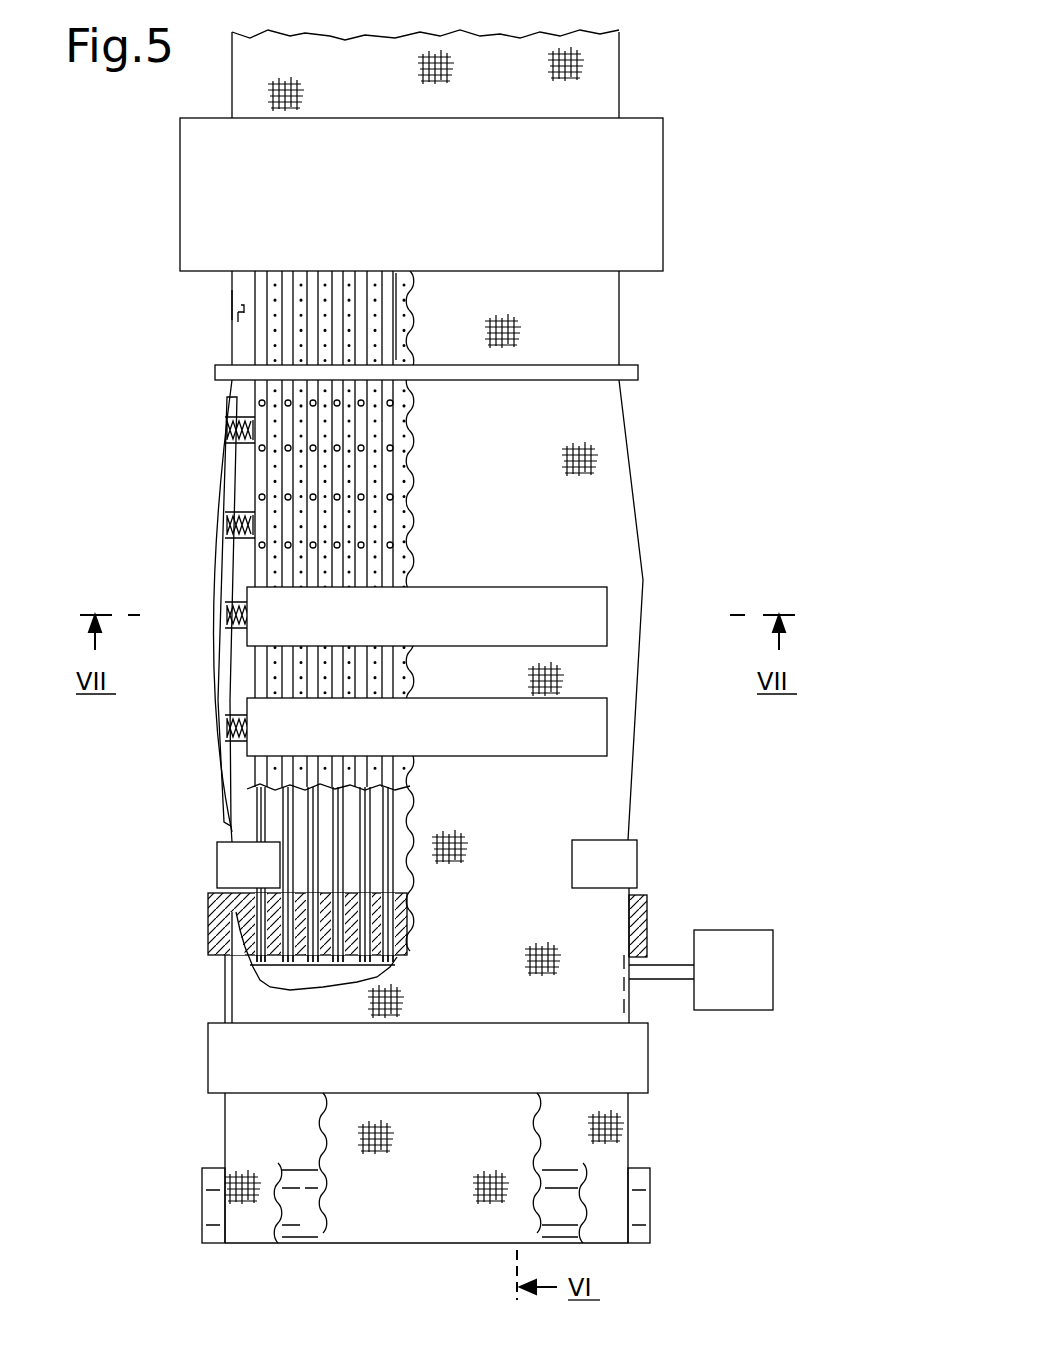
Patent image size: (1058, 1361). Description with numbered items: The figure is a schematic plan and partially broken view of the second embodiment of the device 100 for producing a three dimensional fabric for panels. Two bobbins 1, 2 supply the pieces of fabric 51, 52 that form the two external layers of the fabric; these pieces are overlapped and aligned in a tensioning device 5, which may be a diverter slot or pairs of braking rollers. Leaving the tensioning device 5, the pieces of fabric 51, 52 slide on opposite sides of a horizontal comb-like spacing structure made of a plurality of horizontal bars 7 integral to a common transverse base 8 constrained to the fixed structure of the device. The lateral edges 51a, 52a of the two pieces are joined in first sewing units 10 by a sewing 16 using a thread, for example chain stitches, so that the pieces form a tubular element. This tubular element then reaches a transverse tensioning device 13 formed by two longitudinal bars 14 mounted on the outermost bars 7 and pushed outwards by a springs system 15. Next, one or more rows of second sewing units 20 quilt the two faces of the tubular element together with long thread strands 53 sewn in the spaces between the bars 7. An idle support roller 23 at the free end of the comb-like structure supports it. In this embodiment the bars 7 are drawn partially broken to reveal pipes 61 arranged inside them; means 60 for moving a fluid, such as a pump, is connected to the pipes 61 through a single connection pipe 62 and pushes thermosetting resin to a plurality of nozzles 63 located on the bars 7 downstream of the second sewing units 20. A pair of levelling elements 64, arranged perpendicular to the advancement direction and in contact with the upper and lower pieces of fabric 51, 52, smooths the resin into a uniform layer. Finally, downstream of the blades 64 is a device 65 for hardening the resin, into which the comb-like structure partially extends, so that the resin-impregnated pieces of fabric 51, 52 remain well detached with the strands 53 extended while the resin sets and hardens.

The bobbin 1 is at (296, 1218).
The bobbin 2 is at (205, 1212).
The tensioning device 5 is at (635, 1062).
The bars 7 is at (358, 470).
The common transverse base 8 is at (375, 926).
The first sewing units 10 is at (228, 868).
The transverse tensioning device 13 is at (174, 619).
The longitudinal bars 14 is at (227, 460).
The springs system 15 is at (148, 417).
The sewing 16 is at (212, 598).
The second sewing units 20 is at (478, 605).
The idle support roller 23 is at (232, 311).
The piece of fabric 51 is at (415, 1228).
The lateral edge 51a is at (228, 978).
The piece of fabric 52 is at (233, 1125).
The lateral edge 52a is at (230, 1010).
The thread strands 53 is at (380, 347).
The means for moving a fluid 60 is at (735, 952).
The pipes 61 is at (290, 828).
The connection pipe 62 is at (680, 975).
The nozzles 63 is at (392, 545).
The levelling elements 64 is at (593, 375).
The device for hardening the resin 65 is at (638, 135).
The device for producing a three dimensional fabric for panels 100 is at (718, 242).